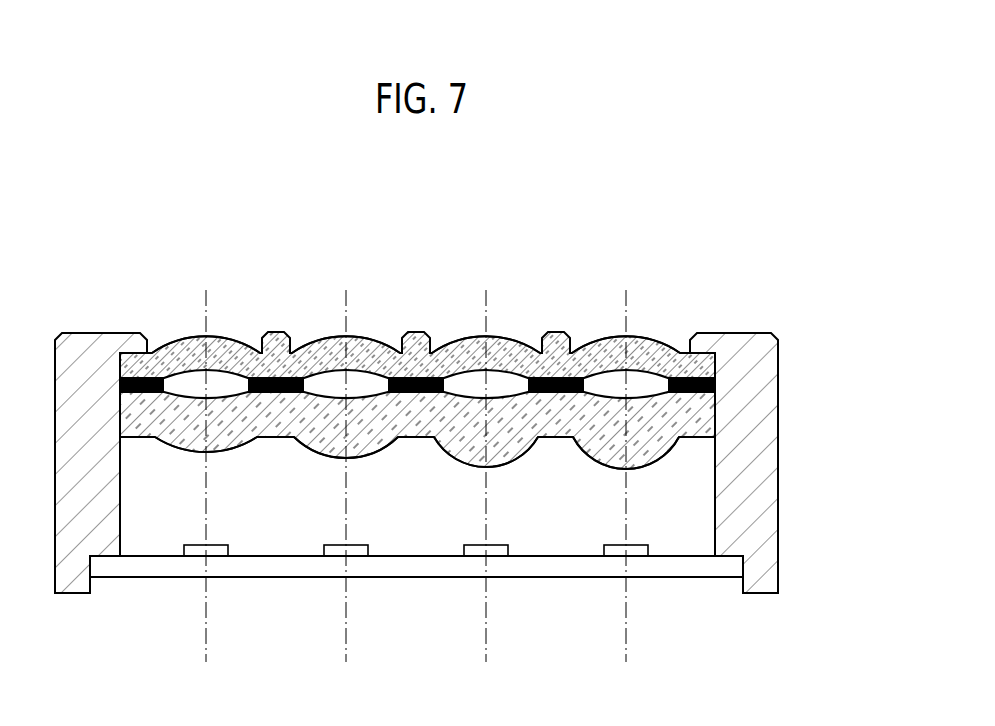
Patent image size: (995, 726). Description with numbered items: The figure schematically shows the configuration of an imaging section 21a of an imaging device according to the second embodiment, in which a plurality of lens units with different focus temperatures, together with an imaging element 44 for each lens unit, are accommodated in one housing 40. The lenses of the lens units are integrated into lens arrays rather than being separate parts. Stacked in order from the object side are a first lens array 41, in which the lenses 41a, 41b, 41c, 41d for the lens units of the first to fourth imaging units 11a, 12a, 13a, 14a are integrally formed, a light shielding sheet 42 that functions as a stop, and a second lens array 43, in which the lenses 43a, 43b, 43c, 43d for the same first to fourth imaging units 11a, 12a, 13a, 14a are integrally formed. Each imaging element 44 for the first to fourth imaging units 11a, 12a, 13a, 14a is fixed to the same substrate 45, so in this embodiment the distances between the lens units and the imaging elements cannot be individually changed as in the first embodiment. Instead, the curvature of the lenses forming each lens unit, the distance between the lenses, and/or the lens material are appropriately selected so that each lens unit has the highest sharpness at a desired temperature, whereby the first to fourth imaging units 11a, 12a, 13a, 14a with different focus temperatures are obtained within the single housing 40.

The imaging section 21a is at (745, 231).
The housing 40 is at (90, 340).
The first lens array 41 is at (708, 362).
The lens 41a is at (222, 338).
The lens 41b is at (362, 338).
The lens 41c is at (502, 338).
The lens 41d is at (642, 338).
The light shielding sheet 42 is at (706, 381).
The second lens array 43 is at (706, 421).
The lens 43a is at (220, 442).
The lens 43b is at (361, 444).
The lens 43c is at (507, 448).
The lens 43d is at (648, 450).
The imaging element 44 is at (192, 557).
The substrate 45 is at (692, 568).
The first imaging unit 11a is at (207, 494).
The second imaging unit 12a is at (347, 494).
The third imaging unit 13a is at (487, 494).
The fourth imaging unit 14a is at (627, 494).